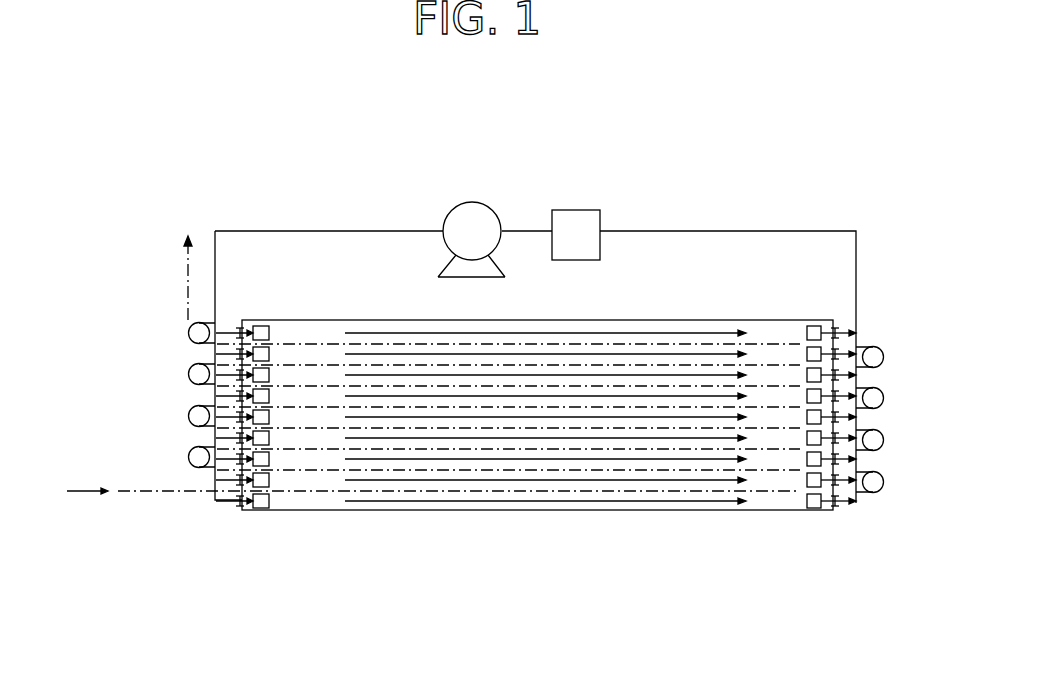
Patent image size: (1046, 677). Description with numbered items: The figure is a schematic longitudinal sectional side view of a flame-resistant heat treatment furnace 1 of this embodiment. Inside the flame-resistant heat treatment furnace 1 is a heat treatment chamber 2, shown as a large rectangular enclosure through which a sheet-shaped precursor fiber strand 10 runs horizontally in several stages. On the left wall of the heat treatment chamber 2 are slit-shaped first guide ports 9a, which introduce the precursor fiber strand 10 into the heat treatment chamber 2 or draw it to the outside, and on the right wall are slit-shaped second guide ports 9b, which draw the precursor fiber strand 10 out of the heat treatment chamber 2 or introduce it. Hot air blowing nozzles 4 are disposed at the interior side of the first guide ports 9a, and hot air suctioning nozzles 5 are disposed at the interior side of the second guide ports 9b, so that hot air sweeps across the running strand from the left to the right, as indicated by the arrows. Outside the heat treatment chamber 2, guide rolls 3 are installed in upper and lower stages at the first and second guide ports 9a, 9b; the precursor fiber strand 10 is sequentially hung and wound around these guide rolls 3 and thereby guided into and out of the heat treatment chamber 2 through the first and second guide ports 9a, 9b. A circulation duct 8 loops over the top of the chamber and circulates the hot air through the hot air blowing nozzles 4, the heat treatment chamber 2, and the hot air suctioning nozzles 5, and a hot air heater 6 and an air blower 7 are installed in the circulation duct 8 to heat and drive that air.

The flame-resistant heat treatment furnace 1 is at (477, 434).
The heat treatment chamber 2 is at (320, 458).
The guide rolls 3 is at (188, 333).
The hot air blowing nozzles 4 is at (270, 329).
The hot air suctioning nozzles 5 is at (806, 336).
The hot air heater 6 is at (576, 210).
The air blower 7 is at (470, 202).
The circulation duct 8 is at (330, 231).
The first guide ports 9a is at (262, 427).
The second guide ports 9b is at (813, 433).
The precursor fiber strand 10 is at (150, 491).